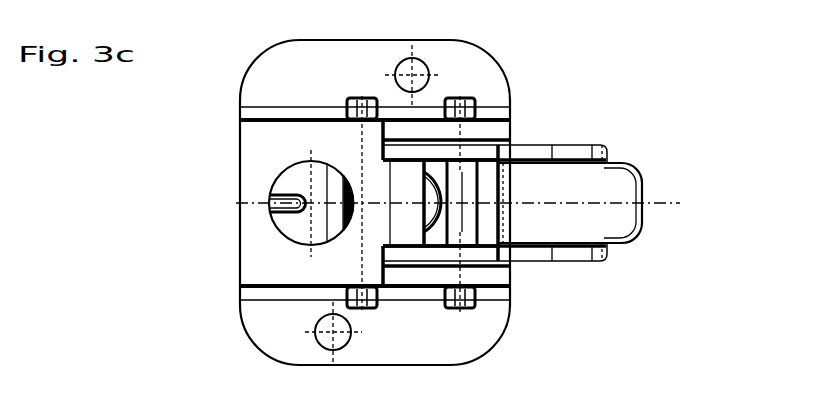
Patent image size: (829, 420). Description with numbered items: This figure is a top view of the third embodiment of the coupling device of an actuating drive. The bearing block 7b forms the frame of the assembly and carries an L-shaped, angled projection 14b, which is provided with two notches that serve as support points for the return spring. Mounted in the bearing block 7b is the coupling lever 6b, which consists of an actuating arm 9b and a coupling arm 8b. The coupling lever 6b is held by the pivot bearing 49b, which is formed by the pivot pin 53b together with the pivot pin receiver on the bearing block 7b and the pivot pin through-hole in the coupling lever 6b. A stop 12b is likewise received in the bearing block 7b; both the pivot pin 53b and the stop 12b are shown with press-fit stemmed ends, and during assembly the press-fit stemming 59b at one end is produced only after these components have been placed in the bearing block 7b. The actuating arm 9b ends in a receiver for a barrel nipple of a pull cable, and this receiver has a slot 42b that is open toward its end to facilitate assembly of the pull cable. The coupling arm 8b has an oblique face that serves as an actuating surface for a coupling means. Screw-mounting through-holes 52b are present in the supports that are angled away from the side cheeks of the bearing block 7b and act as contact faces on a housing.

The bearing block 7b is at (247, 74).
The stop 12b is at (364, 99).
The screw-mounting through-holes 52b is at (418, 70).
The press-fit stemming 59b is at (350, 100).
The pivot pin 53b is at (484, 178).
The projection 14b is at (418, 188).
The slot 42b is at (272, 206).
The actuating arm 9b is at (300, 225).
The coupling arm 8b is at (602, 194).
The coupling lever 6b is at (607, 259).
The pivot bearing 49b is at (488, 289).